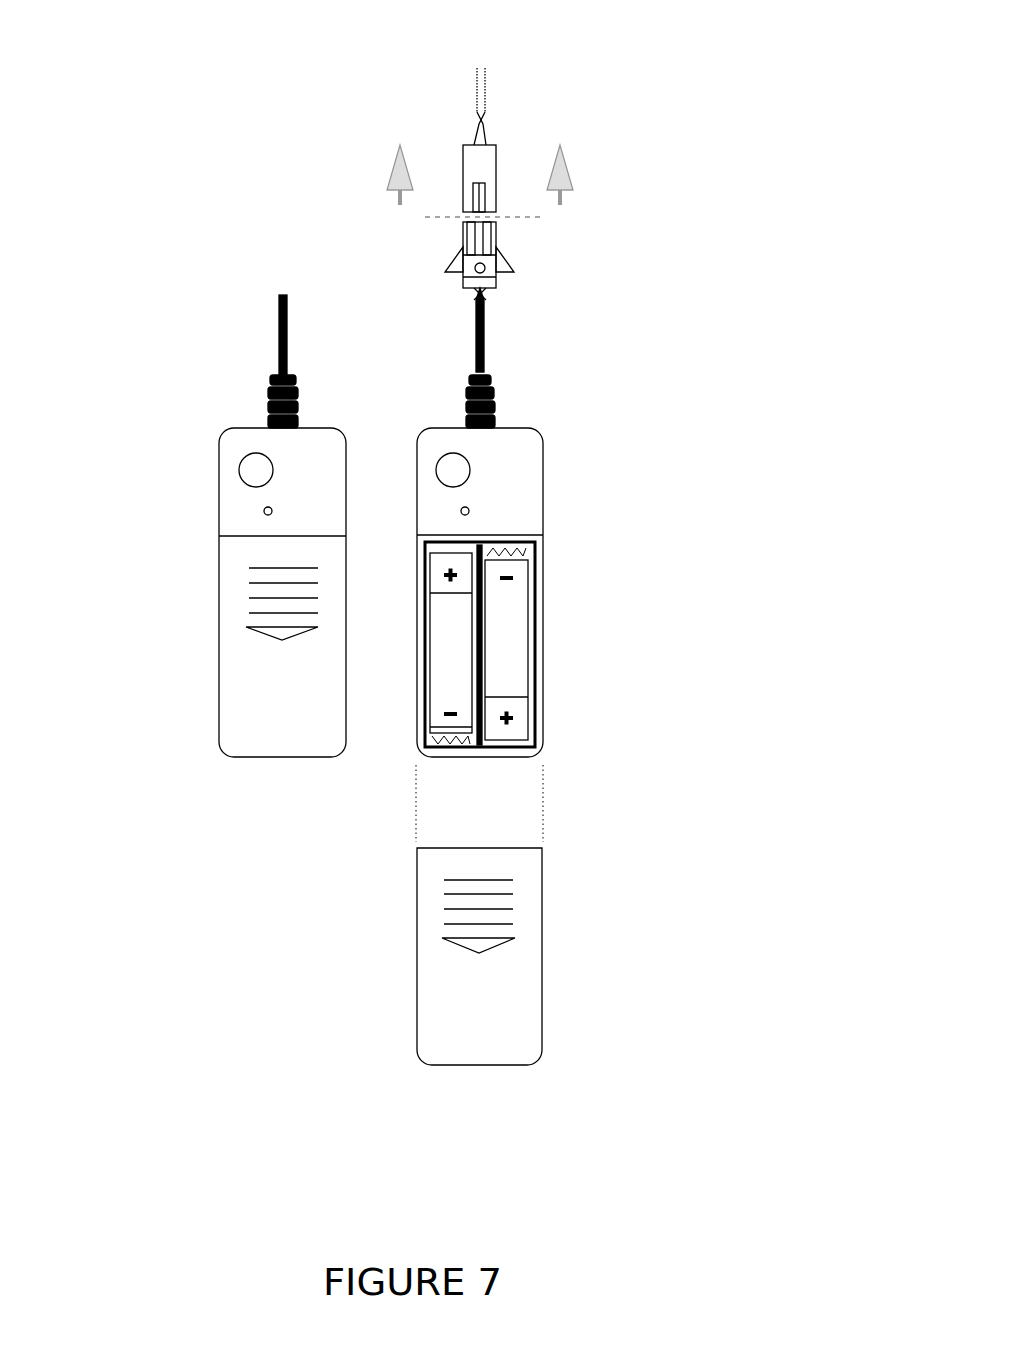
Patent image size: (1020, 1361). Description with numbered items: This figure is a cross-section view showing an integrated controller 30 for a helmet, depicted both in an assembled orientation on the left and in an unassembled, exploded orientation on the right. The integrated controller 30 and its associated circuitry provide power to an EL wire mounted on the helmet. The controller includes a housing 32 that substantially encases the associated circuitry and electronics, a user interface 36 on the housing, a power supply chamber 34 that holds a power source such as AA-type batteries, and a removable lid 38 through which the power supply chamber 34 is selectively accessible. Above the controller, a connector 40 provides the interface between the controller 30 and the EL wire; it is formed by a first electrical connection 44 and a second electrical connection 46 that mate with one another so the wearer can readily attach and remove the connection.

The integrated controller 30 is at (200, 412).
The housing 32 is at (304, 515).
The power supply chamber 34 is at (505, 647).
The user interface 36 is at (455, 468).
The removable lid 38 is at (520, 988).
The connector 40 is at (653, 157).
The first electrical connection 44 is at (478, 342).
The second electrical connection 46 is at (480, 107).